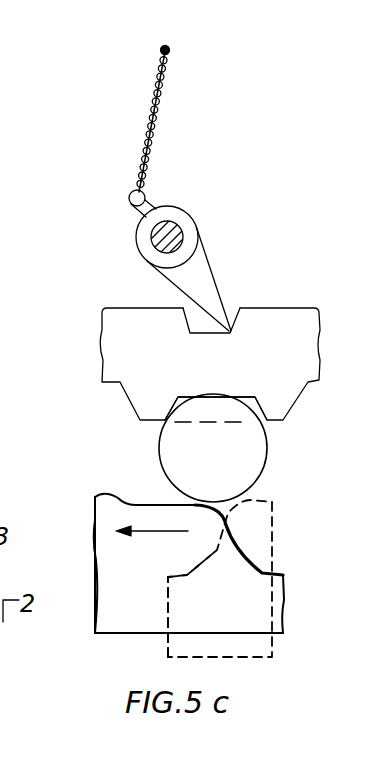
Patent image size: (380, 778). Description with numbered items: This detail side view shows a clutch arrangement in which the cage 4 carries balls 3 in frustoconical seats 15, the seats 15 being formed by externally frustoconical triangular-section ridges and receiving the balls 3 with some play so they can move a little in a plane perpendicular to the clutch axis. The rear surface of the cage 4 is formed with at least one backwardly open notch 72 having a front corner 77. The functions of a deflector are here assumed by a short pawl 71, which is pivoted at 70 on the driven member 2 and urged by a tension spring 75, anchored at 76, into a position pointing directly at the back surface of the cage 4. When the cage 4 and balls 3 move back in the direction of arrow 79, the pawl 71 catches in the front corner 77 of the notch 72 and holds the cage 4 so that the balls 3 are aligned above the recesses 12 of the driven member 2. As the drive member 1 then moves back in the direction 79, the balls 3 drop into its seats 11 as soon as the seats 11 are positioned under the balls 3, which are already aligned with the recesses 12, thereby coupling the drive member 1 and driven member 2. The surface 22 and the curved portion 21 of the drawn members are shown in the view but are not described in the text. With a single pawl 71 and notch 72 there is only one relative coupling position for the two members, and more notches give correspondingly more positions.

The anchor 76 is at (170, 50).
The tension spring 75 is at (160, 120).
The pivot 70 is at (169, 233).
The pawl 71 is at (208, 267).
The notch 72 is at (208, 322).
The front corner 77 is at (236, 329).
The cage 4 is at (252, 363).
The seats 15 is at (252, 405).
The balls 3 is at (240, 438).
The lower block top surface 22 is at (145, 503).
The deformed curved portion 21 is at (250, 559).
The driven member 2 is at (275, 602).
The arrow 79 is at (157, 531).
The recesses 12 is at (262, 495).
The seats 11 is at (206, 560).
The drive member 1 is at (180, 605).